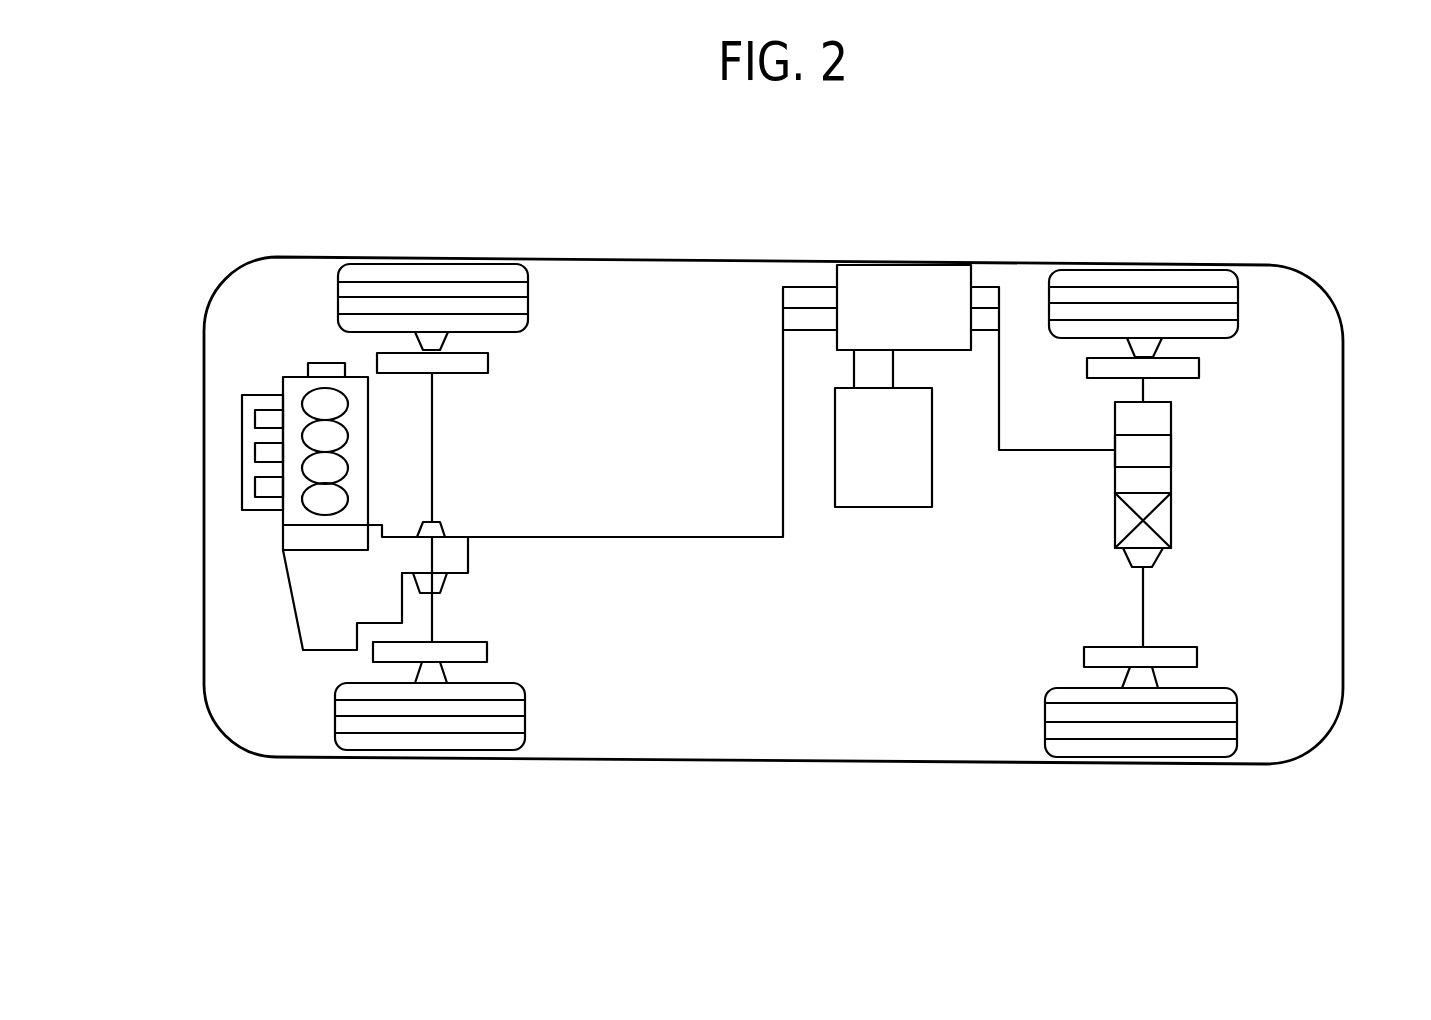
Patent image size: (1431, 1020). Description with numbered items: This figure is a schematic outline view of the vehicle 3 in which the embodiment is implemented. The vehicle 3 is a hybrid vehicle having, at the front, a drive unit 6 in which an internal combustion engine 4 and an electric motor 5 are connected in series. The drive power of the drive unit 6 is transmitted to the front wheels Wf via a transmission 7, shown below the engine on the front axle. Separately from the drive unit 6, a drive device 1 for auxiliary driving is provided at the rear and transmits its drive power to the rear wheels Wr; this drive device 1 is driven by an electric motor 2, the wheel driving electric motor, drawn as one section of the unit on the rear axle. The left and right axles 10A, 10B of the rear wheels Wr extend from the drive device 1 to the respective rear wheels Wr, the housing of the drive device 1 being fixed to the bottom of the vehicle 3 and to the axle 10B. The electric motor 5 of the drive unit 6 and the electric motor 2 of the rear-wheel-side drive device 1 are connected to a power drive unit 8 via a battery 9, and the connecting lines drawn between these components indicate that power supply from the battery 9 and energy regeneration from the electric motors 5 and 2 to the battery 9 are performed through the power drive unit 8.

The drive device 1 is at (1270, 447).
The electric motor 2 is at (1162, 452).
The vehicle 3 is at (1280, 212).
The internal combustion engine 4 is at (292, 388).
The electric motor 5 is at (302, 542).
The drive unit 6 is at (212, 432).
The transmission 7 is at (322, 593).
The power drive unit (PDU) 8 is at (940, 290).
The battery 9 is at (872, 495).
The axle 10A is at (1143, 602).
The axle 10B is at (1143, 392).
The front wheels Wf is at (373, 803).
The rear wheels Wr is at (1065, 807).